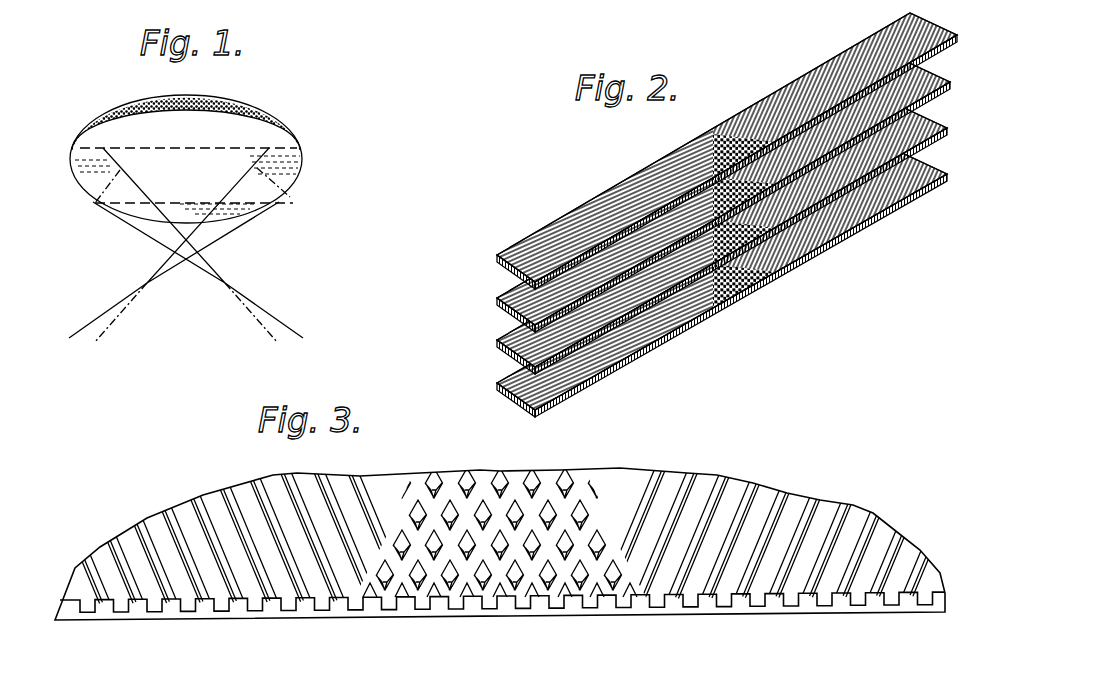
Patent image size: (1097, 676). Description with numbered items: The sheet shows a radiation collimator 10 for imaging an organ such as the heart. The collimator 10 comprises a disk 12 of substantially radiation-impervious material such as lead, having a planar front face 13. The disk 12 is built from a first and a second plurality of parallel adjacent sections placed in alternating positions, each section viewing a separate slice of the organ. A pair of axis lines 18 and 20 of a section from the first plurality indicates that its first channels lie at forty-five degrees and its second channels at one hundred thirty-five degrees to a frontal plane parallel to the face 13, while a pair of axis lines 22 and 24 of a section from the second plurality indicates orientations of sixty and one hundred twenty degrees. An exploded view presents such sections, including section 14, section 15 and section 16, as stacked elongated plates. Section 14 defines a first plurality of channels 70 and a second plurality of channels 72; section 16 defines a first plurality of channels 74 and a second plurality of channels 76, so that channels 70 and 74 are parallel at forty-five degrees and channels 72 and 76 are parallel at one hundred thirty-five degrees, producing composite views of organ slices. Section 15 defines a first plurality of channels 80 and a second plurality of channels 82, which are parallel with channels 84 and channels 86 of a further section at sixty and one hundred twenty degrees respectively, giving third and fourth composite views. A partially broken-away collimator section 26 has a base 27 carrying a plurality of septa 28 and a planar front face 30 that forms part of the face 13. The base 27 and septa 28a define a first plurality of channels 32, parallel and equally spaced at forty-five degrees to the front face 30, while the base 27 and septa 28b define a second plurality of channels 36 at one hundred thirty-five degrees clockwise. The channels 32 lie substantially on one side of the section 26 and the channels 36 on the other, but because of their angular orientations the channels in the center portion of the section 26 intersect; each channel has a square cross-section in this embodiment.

In FIG. 1, the collimator 10 is at (90, 103).
In FIG. 1, the disk 12 is at (257, 101).
In FIG. 1, the planar front face 13 is at (197, 145).
In FIG. 1, the axis line 18 is at (95, 203).
In FIG. 1, the axis line 20 is at (290, 197).
In FIG. 1, the axis line 22 is at (153, 237).
In FIG. 1, the axis line 24 is at (225, 233).
In FIG. 2, the section 14 is at (945, 23).
In FIG. 2, the section 15 is at (944, 62).
In FIG. 2, the section 16 is at (940, 110).
In FIG. 2, the first plurality of channels 70 is at (563, 270).
In FIG. 2, the second plurality of channels 72 is at (908, 90).
In FIG. 2, the first plurality of channels 74 is at (634, 330).
In FIG. 2, the second plurality of channels 76 is at (872, 176).
In FIG. 2, the first plurality of channels 80 is at (665, 262).
In FIG. 2, the second plurality of channels 82 is at (837, 148).
In FIG. 2, the first plurality of channels 84 is at (684, 348).
In FIG. 2, the second plurality of channels 86 is at (815, 263).
In FIG. 3, the collimator section 26 is at (205, 632).
In FIG. 3, the base 27 is at (138, 620).
In FIG. 3, the septa 28 is at (508, 522).
In FIG. 3, the septa 28a is at (273, 550).
In FIG. 3, the septa 28b is at (753, 543).
In FIG. 3, the planar front face 30 is at (368, 612).
In FIG. 3, the first plurality of channels 32 is at (218, 604).
In FIG. 3, the second plurality of channels 36 is at (455, 596).